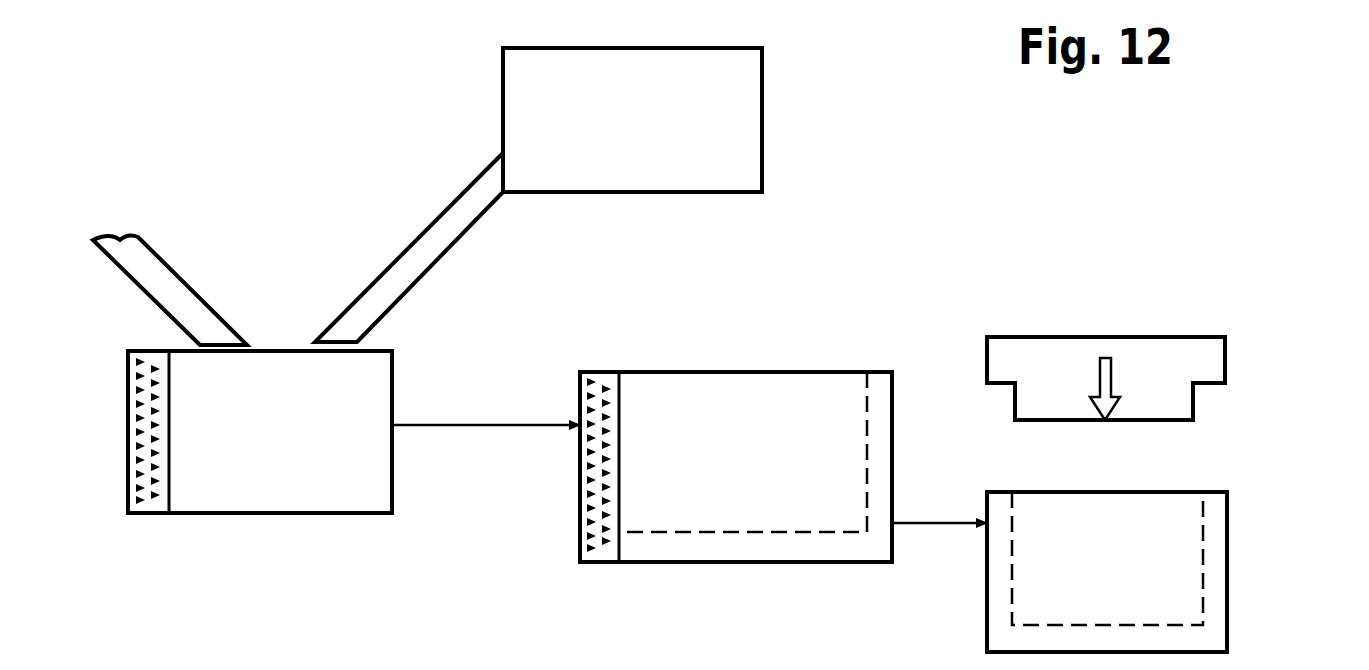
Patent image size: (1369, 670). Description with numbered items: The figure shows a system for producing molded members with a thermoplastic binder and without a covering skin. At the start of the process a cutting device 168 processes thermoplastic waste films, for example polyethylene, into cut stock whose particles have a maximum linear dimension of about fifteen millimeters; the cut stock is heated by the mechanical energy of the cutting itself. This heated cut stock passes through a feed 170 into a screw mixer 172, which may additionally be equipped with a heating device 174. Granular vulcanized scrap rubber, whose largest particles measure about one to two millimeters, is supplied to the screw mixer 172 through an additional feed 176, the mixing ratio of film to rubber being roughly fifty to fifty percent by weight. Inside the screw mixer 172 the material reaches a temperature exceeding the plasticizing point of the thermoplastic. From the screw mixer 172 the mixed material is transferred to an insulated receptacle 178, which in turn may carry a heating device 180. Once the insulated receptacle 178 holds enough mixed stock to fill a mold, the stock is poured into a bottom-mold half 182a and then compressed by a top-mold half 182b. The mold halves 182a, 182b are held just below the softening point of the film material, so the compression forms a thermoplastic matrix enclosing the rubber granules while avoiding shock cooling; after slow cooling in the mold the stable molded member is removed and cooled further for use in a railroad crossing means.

The cutting device 168 is at (762, 158).
The feed 170 is at (435, 250).
The screw mixer 172 is at (300, 500).
The heating device 174 is at (138, 412).
The additional feed 176 is at (173, 270).
The insulated receptacle 178 is at (755, 547).
The heating device 180 is at (587, 483).
The bottom-mold half 182a is at (1227, 602).
The top-mold half 182b is at (1225, 353).